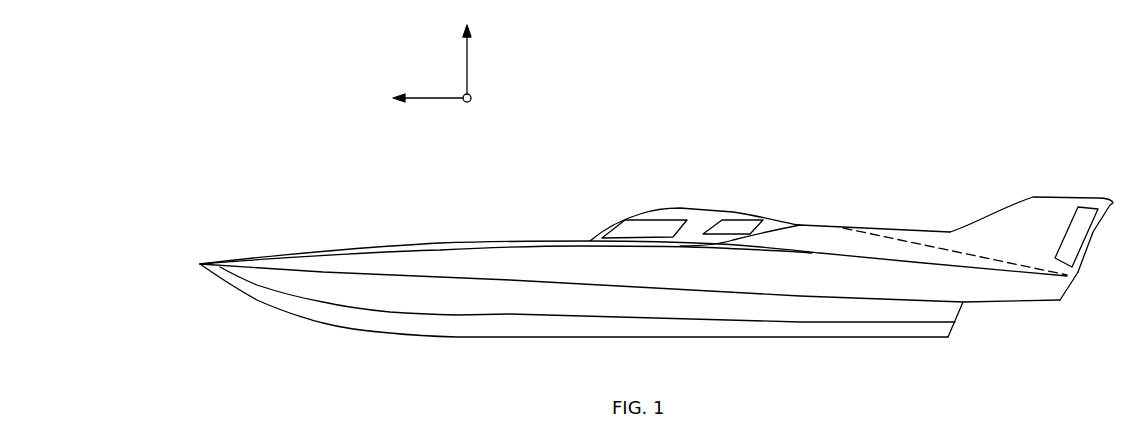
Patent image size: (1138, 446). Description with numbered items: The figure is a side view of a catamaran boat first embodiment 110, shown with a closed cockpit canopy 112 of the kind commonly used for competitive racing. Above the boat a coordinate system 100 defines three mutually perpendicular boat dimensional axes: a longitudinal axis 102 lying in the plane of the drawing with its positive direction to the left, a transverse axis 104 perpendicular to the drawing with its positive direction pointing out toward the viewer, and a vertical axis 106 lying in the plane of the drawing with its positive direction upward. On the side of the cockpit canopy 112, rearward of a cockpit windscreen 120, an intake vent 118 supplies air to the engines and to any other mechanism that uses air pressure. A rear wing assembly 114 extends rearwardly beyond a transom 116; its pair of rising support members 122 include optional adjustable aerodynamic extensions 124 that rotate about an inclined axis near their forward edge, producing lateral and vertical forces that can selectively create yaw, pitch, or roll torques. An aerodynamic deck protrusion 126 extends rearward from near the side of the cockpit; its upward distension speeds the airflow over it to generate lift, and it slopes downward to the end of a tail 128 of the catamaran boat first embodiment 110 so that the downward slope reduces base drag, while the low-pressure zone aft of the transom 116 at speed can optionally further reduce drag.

The coordinate system 100 is at (537, 85).
The longitudinal axis 102 is at (437, 97).
The transverse axis 104 is at (468, 102).
The vertical axis 106 is at (467, 70).
The catamaran boat first embodiment 110 is at (668, 250).
The cockpit canopy 112 is at (762, 185).
The rear wing assembly 114 is at (1043, 190).
The transom 116 is at (968, 331).
The intake vent 118 is at (740, 222).
The cockpit windscreen 120 is at (613, 223).
The rising support members 122 is at (1010, 207).
The adjustable aerodynamic extensions 124 is at (1083, 235).
The aerodynamic deck protrusion 126 is at (913, 237).
The tail 128 is at (1027, 300).